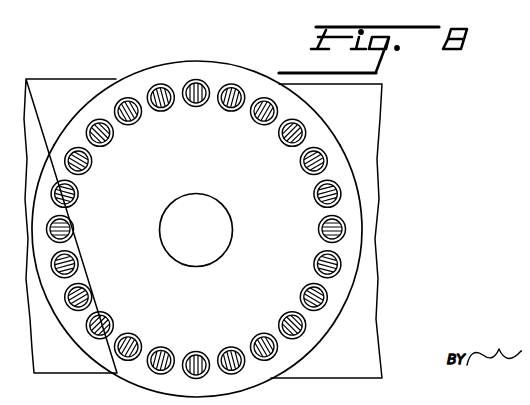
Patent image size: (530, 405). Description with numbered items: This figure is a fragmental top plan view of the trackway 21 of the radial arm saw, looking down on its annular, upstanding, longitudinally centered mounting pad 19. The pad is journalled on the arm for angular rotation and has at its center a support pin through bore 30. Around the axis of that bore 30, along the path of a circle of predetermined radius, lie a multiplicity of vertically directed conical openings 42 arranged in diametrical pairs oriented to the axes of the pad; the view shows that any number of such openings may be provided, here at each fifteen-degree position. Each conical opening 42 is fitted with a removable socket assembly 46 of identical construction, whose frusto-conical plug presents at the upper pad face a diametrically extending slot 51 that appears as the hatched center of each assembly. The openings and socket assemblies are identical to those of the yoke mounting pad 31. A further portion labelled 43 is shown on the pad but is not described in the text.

The mounting pad 19 is at (197, 219).
The trackway 21 is at (378, 98).
The support pin through bore 30 is at (209, 186).
The mounting pad 31 is at (200, 48).
The conical openings 42 is at (263, 99).
The disc body 43 is at (171, 219).
The socket assembly 46 is at (203, 104).
The slot 51 is at (157, 111).